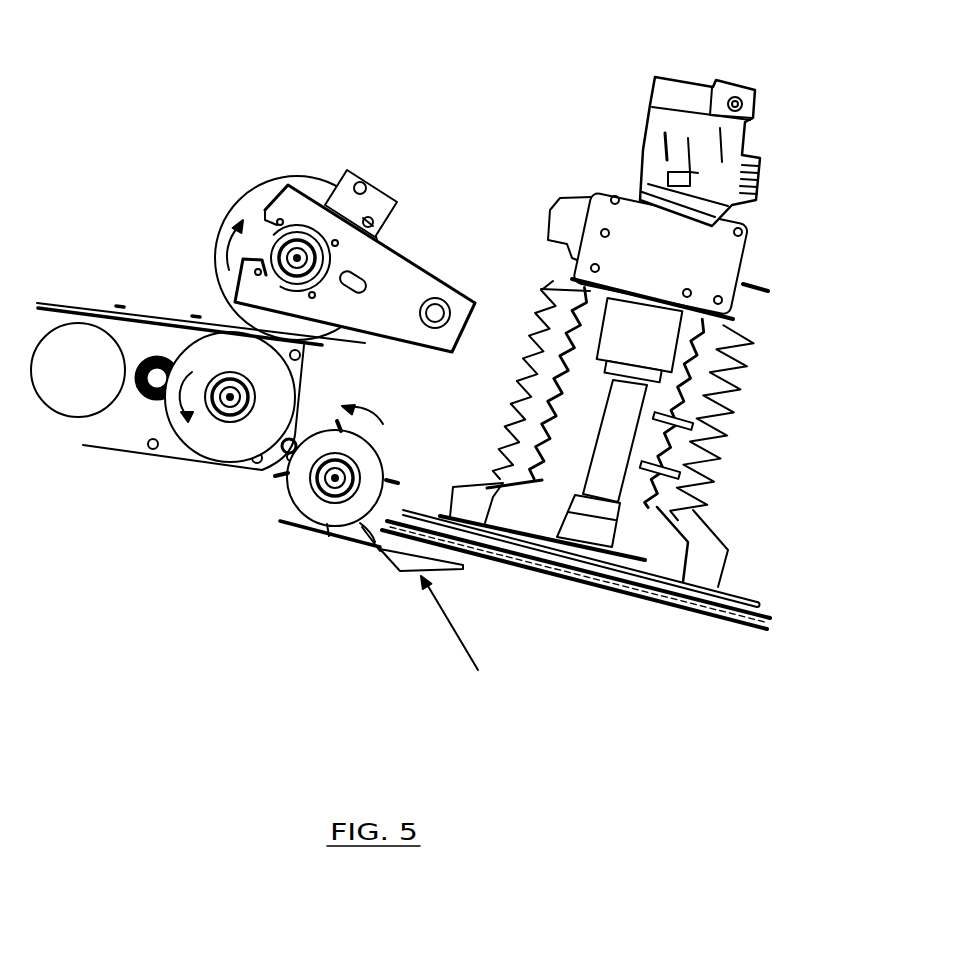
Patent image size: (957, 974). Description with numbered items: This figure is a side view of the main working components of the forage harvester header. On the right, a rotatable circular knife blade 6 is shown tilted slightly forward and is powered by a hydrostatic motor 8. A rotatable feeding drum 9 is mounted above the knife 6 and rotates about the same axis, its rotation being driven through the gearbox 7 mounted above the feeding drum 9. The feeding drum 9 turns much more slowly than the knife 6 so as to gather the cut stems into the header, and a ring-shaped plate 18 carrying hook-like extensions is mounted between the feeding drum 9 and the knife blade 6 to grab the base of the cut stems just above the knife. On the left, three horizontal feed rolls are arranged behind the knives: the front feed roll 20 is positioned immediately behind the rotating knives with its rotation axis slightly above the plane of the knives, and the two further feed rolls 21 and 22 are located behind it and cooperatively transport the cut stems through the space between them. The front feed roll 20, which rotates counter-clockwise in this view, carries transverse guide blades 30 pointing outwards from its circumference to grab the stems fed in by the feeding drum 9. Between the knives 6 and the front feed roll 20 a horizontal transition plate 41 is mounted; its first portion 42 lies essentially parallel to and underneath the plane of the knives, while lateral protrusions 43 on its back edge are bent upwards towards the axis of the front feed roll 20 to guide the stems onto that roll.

The circular knife blade 6 is at (774, 613).
The gearbox 7 is at (635, 262).
The hydrostatic motor 8 is at (673, 93).
The feeding drum 9 is at (610, 463).
The ring-shaped plate 18 is at (758, 600).
The front feed roll 20 is at (305, 497).
The second feed roll 21 is at (222, 350).
The third feed roll 22 is at (273, 182).
The transverse guide blade 30 is at (390, 475).
The horizontal transition plate 41 is at (470, 638).
The first portion of the transition plate 42 is at (447, 567).
The lateral protrusion 43 is at (357, 530).